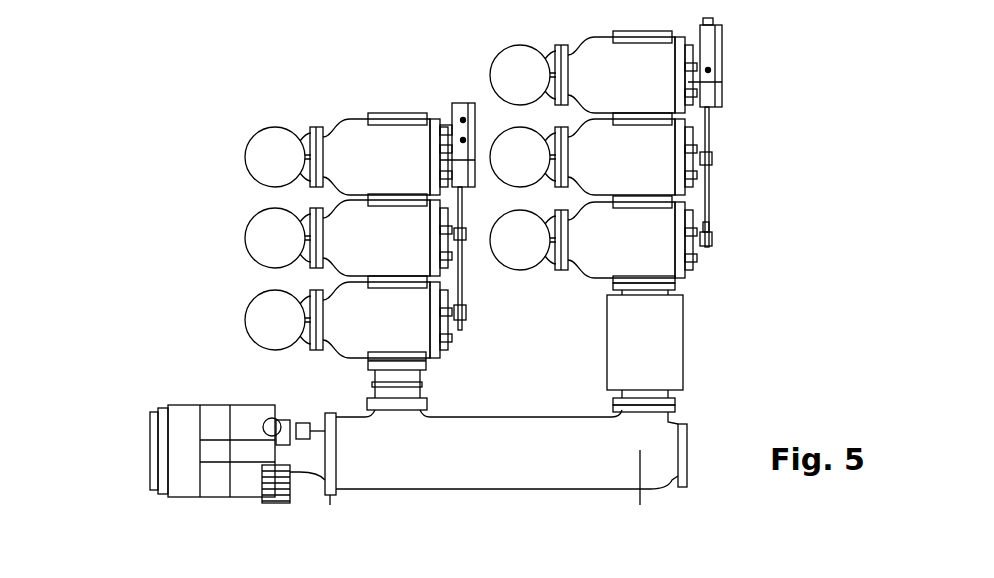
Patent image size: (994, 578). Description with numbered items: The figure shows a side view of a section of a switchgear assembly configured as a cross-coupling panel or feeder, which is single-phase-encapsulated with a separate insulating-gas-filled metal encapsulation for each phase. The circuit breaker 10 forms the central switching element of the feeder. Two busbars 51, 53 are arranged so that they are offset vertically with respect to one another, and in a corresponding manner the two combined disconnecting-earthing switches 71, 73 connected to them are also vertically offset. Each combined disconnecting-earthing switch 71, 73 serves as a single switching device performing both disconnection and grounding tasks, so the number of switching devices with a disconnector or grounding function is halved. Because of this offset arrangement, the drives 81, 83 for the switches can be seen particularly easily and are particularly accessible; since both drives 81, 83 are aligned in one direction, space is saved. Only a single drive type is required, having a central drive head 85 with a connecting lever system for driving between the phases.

The circuit breaker 10 is at (447, 457).
The busbar 51 is at (272, 318).
The busbar 53 is at (522, 238).
The combined disconnecting-earthing switch 71 is at (365, 322).
The combined disconnecting-earthing switch 73 is at (632, 247).
The drive 81 is at (428, 317).
The drive 83 is at (712, 240).
The central drive head 85 is at (458, 115).